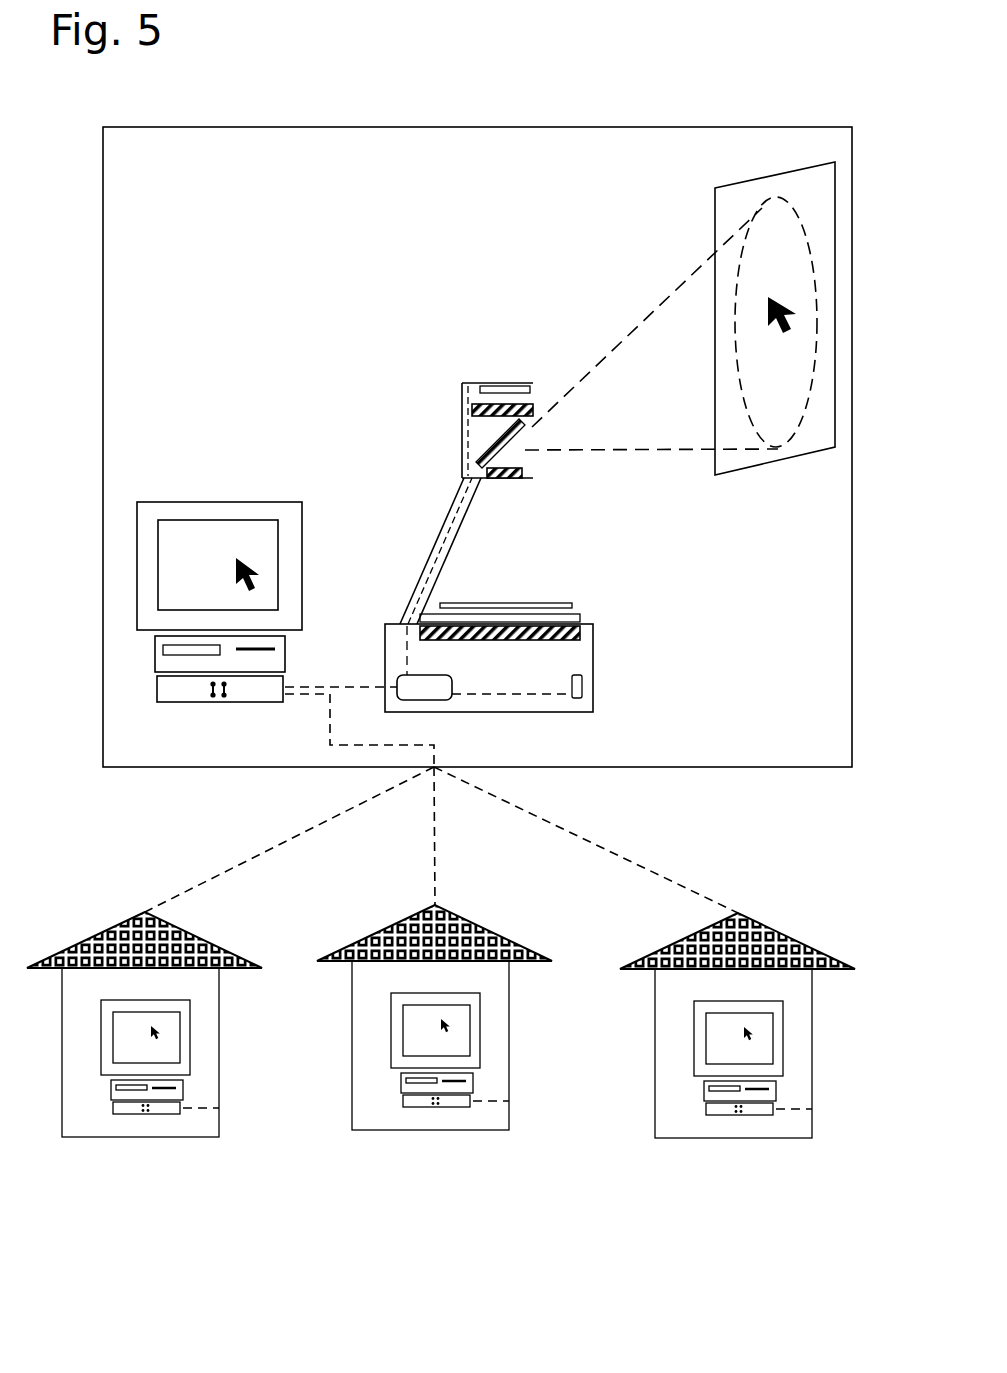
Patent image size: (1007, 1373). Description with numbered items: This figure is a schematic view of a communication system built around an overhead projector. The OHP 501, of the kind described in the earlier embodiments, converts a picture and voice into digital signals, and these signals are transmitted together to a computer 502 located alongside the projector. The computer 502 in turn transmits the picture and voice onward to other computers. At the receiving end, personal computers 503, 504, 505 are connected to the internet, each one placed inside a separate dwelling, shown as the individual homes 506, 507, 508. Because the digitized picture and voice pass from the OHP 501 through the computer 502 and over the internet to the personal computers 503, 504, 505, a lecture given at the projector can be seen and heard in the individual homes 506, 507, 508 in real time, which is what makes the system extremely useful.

The OHP 501 is at (443, 547).
The computer 502 is at (211, 575).
The personal computer 503 is at (203, 1046).
The personal computer 504 is at (492, 1041).
The personal computer 505 is at (686, 1068).
The home 506 is at (144, 1052).
The home 507 is at (434, 1046).
The home 508 is at (737, 1055).